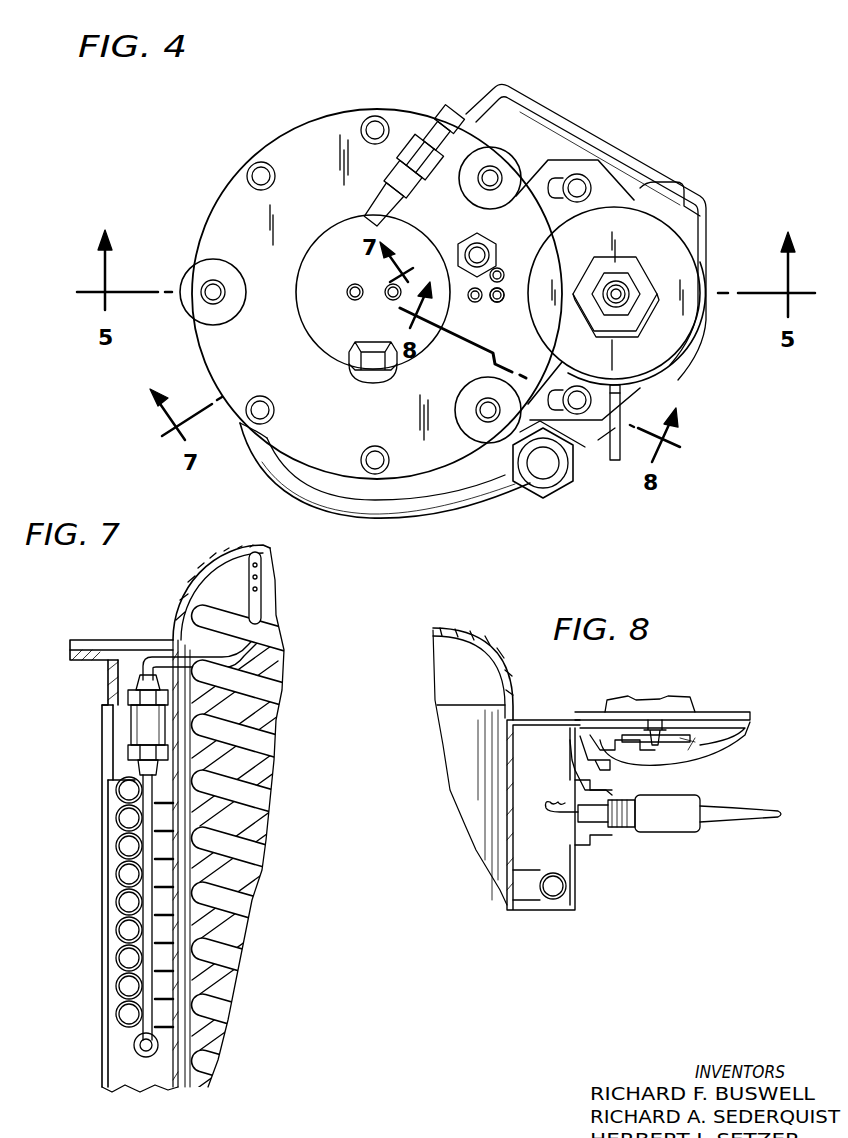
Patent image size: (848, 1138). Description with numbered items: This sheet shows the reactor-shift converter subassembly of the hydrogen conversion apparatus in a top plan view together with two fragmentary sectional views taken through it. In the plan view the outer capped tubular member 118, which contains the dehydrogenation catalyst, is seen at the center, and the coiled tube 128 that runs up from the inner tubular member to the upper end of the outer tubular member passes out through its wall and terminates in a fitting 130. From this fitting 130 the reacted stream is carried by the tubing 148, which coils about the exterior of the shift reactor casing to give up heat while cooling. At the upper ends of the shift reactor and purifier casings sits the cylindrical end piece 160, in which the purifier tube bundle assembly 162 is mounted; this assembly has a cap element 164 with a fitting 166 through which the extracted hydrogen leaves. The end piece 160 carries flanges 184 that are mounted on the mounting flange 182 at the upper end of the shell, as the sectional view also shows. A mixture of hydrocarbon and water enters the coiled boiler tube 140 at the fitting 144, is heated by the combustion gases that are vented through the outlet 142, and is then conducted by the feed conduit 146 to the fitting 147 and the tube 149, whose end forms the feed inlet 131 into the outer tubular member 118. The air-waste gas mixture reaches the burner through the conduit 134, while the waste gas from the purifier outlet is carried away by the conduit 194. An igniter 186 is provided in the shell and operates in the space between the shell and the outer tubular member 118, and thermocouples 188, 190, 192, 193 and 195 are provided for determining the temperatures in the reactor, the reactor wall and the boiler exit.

In FIG. 7, the outer capped tubular member 118 is at (140, 795).
In FIG. 7, the coiled tube 128 is at (263, 827).
In FIG. 4, the fitting 130 is at (455, 110).
In FIG. 7, the inlet 131 is at (262, 570).
In FIG. 4, the conduit 134 is at (450, 515).
In FIG. 7, the coiled boiler tube 140 is at (135, 1040).
In FIG. 8, the coiled boiler tube 140 is at (553, 900).
In FIG. 7, the outlet 142 is at (105, 728).
In FIG. 4, the fitting 144 is at (494, 242).
In FIG. 7, the feed conduit 146 is at (118, 918).
In FIG. 7, the fitting 147 is at (130, 740).
In FIG. 4, the tubing 148 is at (600, 125).
In FIG. 7, the tube 149 is at (200, 660).
In FIG. 4, the cylindrical end piece 160 is at (668, 343).
In FIG. 4, the purifier tube bundle assembly 162 is at (650, 348).
In FIG. 4, the cap element 164 is at (622, 262).
In FIG. 8, the cap element 164 is at (700, 698).
In FIG. 4, the fitting 166 is at (628, 289).
In FIG. 4, the mounting flange 182 is at (522, 175).
In FIG. 8, the mounting flange 182 is at (706, 760).
In FIG. 4, the flanges 184 is at (591, 190).
In FIG. 8, the flanges 184 is at (705, 742).
In FIG. 8, the igniter 186 is at (672, 838).
In FIG. 4, the thermocouple 188 is at (350, 285).
In FIG. 4, the thermocouple 190 is at (388, 300).
In FIG. 4, the thermocouple 192 is at (475, 302).
In FIG. 4, the thermocouple 193 is at (504, 272).
In FIG. 4, the conduit 194 is at (614, 462).
In FIG. 4, the thermocouple 195 is at (500, 302).